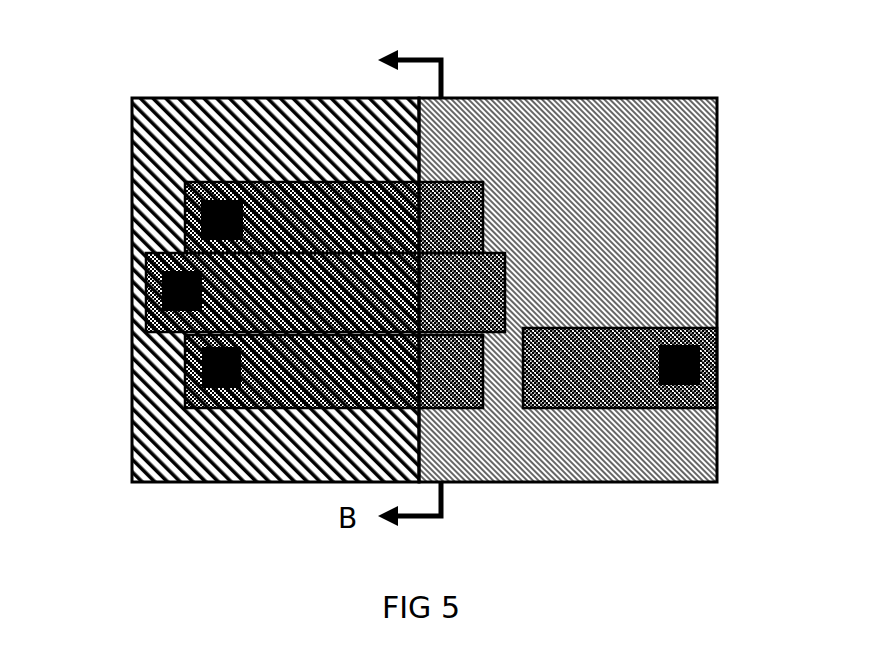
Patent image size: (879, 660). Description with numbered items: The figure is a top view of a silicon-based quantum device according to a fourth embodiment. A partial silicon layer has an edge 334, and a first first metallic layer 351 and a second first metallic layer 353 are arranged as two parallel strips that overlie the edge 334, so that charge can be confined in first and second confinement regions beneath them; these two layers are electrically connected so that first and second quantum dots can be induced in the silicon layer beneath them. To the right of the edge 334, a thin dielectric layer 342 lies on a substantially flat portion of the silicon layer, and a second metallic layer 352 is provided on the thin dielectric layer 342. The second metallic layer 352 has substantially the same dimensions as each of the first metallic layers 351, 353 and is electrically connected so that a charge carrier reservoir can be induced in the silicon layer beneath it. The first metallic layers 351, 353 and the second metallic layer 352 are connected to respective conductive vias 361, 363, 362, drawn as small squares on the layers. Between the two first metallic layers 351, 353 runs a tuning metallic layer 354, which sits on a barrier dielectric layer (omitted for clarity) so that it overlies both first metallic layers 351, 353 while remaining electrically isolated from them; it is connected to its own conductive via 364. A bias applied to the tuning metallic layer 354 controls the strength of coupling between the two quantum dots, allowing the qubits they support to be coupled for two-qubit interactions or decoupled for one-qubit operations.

The edge 334 is at (420, 415).
The thin dielectric layer 342 is at (640, 450).
The first first metallic layer 351 is at (300, 213).
The second metallic layer 352 is at (626, 348).
The second first metallic layer 353 is at (278, 380).
The tuning metallic layer 354 is at (280, 323).
The conductive via 361 is at (216, 216).
The conductive via 362 is at (678, 367).
The conductive via 363 is at (216, 369).
The conductive via 364 is at (180, 290).